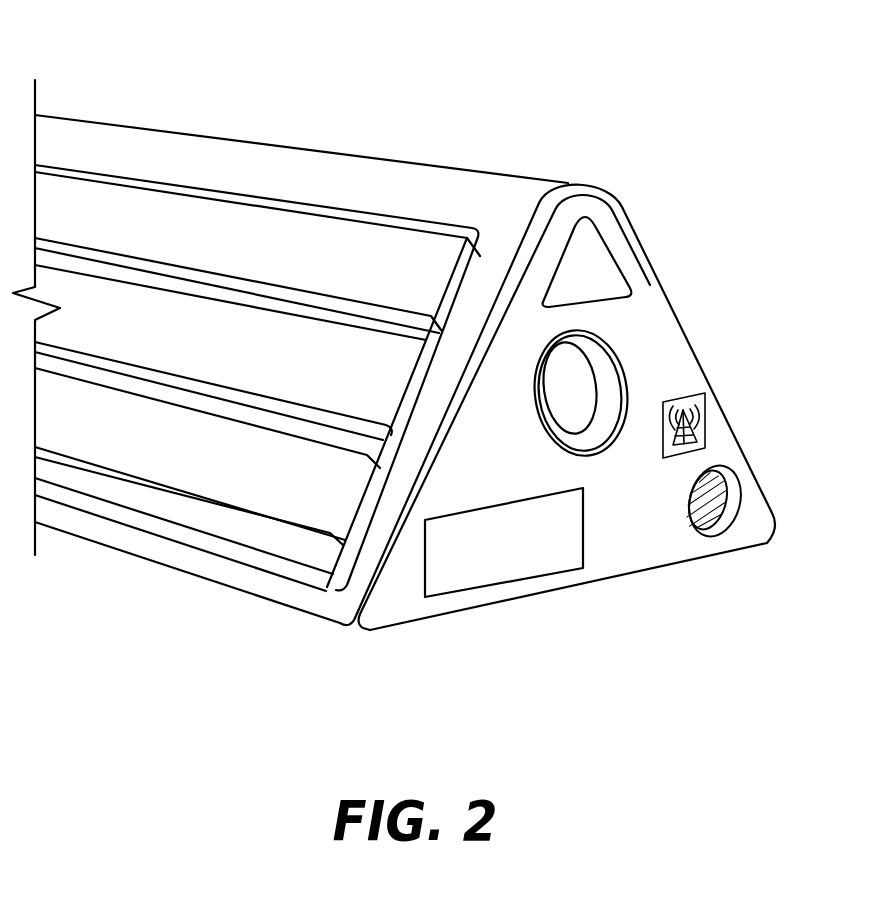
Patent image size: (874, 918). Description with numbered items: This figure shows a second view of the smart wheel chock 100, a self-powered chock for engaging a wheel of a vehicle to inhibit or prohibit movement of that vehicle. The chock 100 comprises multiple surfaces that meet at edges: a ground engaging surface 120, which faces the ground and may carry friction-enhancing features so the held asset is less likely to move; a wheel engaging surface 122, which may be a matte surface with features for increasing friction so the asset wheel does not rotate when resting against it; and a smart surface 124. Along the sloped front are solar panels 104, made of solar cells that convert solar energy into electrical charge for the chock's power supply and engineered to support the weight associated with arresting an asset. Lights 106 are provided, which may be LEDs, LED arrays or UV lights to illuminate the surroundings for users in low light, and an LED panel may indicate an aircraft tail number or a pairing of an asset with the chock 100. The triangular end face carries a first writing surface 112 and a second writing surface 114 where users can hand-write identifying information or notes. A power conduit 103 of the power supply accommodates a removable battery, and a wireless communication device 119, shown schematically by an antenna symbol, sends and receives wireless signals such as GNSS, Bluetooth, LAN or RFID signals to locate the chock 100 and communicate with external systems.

The smart wheel chock 100 is at (763, 163).
The power conduit 103 is at (713, 503).
The solar panel 104 is at (300, 227).
The light 106 is at (302, 372).
The first writing surface 112 is at (592, 240).
The second writing surface 114 is at (513, 562).
The wireless communication device 119 is at (702, 417).
The ground engaging surface 120 is at (655, 575).
The wheel engaging surface 122 is at (680, 313).
The smart surface 124 is at (181, 148).